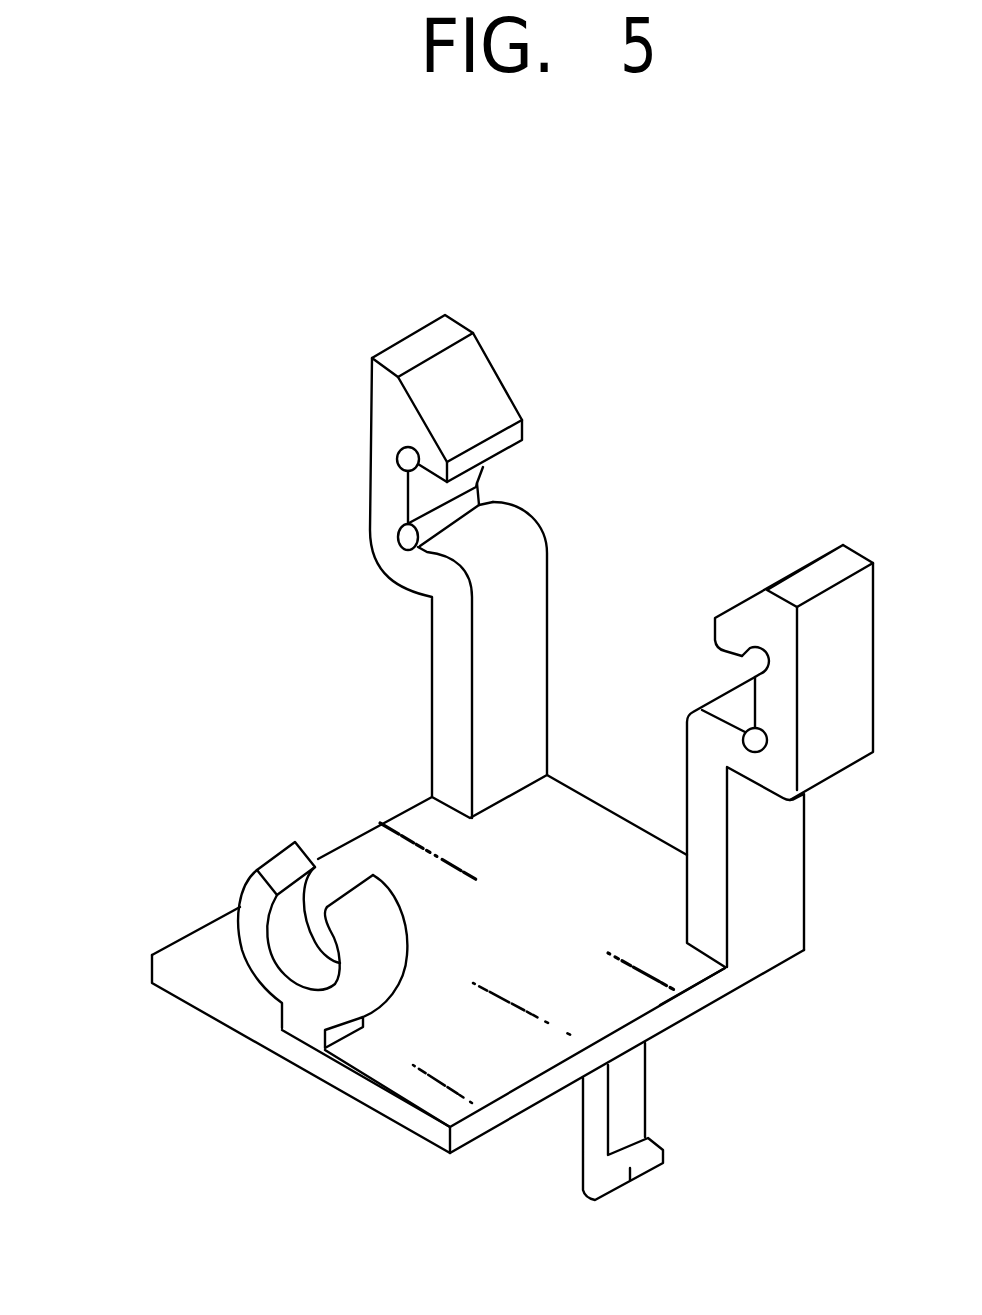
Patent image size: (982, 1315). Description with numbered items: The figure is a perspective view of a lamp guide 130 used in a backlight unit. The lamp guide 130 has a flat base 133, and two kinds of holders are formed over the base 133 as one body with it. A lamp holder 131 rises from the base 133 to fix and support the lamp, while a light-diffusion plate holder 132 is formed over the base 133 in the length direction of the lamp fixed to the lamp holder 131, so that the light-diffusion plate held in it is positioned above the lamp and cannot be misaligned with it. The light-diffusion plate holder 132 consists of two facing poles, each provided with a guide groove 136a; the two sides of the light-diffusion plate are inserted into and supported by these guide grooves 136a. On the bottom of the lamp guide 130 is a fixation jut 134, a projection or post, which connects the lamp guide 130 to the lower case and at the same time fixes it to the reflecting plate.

The lamp guide 130 is at (165, 634).
The lamp holder 131 is at (262, 900).
The light-diffusion plate holder 132 is at (382, 482).
The base 133 is at (360, 845).
The fixation jut 134 is at (637, 1090).
The guide groove 136a is at (518, 489).